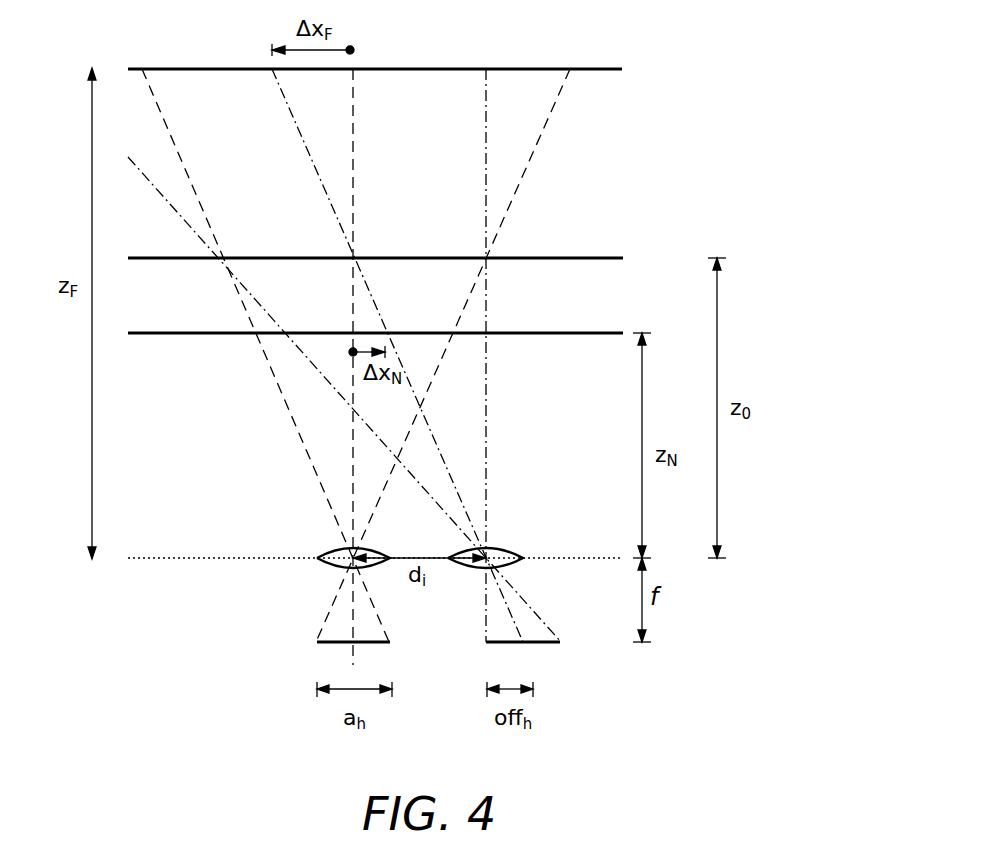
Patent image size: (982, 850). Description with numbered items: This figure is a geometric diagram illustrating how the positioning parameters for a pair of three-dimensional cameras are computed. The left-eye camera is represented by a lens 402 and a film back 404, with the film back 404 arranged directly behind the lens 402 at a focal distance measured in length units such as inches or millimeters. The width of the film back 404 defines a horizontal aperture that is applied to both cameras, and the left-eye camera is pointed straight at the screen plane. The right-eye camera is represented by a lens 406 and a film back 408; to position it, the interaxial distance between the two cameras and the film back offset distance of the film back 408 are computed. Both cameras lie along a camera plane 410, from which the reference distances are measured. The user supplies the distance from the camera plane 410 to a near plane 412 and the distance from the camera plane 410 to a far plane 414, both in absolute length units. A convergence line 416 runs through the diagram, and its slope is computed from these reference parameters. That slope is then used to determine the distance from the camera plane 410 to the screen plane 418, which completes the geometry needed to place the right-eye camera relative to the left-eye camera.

The lens 402 is at (317, 557).
The film back 404 is at (317, 643).
The lens 406 is at (507, 548).
The film back 408 is at (545, 642).
The camera plane 410 is at (147, 558).
The near plane 412 is at (197, 333).
The far plane 414 is at (447, 69).
The convergence line 416 is at (302, 143).
The screen plane 418 is at (528, 258).